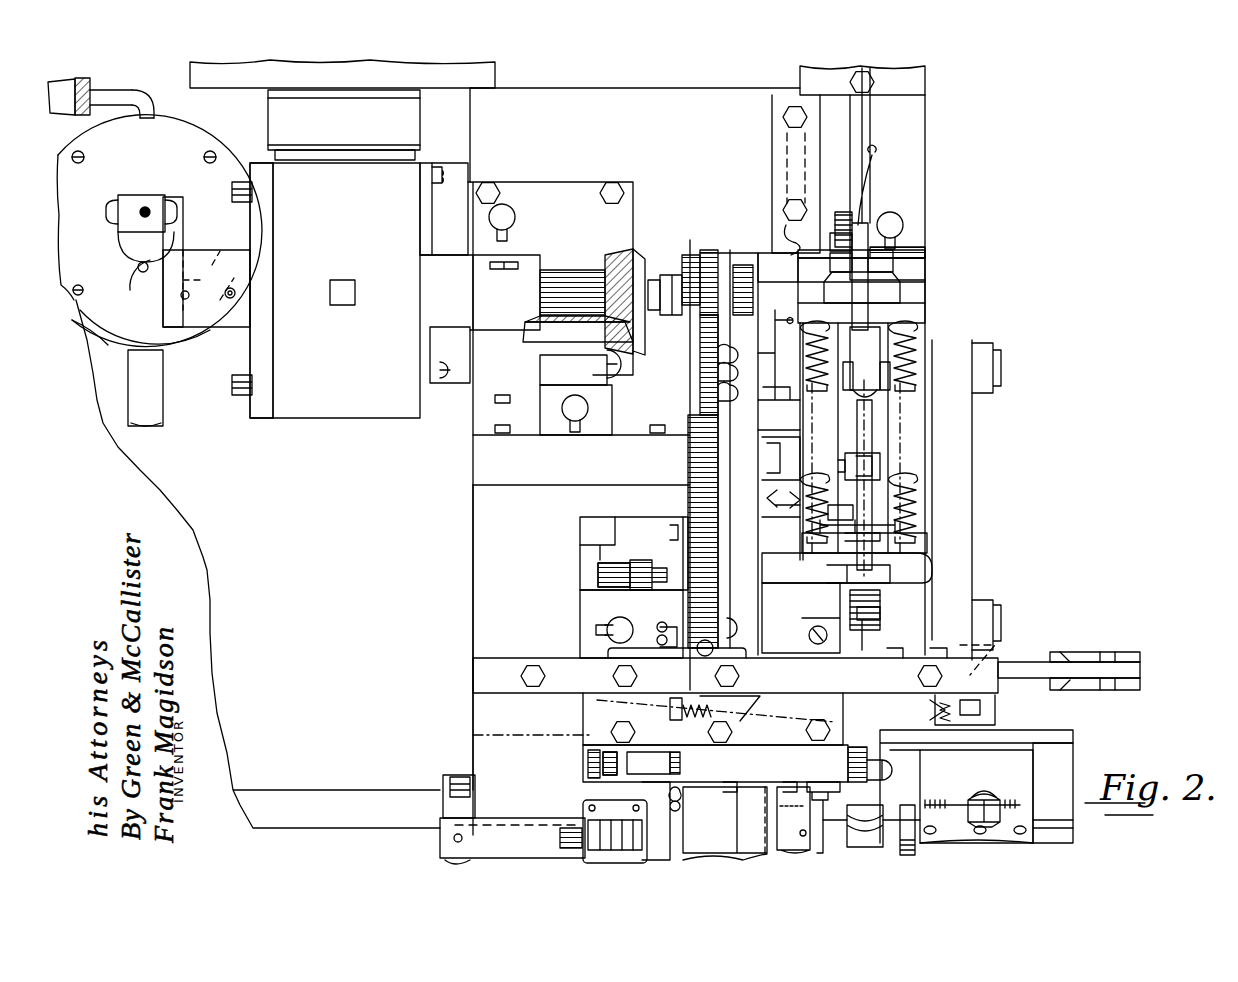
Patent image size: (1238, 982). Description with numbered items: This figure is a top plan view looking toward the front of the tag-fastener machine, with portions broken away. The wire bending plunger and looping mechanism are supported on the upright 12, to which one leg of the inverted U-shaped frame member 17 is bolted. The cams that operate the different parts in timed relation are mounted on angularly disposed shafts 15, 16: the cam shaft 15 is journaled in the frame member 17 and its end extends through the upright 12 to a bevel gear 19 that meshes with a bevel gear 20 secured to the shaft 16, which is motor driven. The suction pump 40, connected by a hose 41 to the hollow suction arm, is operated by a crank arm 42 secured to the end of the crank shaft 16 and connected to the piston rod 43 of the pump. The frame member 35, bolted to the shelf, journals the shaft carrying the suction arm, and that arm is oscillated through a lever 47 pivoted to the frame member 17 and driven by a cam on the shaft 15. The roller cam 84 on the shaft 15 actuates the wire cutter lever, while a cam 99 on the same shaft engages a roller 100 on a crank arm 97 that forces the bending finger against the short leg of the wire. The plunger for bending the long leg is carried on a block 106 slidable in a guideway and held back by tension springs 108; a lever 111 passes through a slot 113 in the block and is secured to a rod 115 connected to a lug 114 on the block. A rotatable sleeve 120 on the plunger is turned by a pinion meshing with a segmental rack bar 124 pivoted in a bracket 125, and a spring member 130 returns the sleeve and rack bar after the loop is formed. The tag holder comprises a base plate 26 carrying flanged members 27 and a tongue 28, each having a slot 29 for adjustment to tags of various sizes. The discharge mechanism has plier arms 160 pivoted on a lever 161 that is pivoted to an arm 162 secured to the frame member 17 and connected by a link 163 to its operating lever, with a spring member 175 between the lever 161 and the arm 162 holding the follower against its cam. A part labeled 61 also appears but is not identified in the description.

The upright 12 is at (581, 465).
The cam shaft 15 is at (560, 372).
The shaft 16 is at (232, 327).
The inverted U-shaped frame member 17 is at (495, 660).
The bevel gear 19 is at (525, 342).
The bevel gear 20 is at (624, 255).
The base plate 26 is at (1053, 793).
The flanged members 27 is at (925, 791).
The tongue 28 is at (866, 850).
The slot 29 is at (1004, 800).
The frame member 35 is at (675, 822).
The suction pump 40 is at (80, 320).
The hose 41 is at (156, 415).
The crank arm 42 is at (170, 282).
The piston rod 43 is at (140, 203).
The lever 47 is at (512, 819).
The lever 61 is at (877, 137).
The roller cam 84 is at (642, 562).
The crank arm 97 is at (807, 769).
The cam 99 is at (593, 760).
The roller 100 is at (653, 763).
The block 106 is at (878, 296).
The tension springs 108 is at (935, 362).
The lever 111 is at (890, 257).
The slot 113 is at (865, 345).
The lug 114 is at (885, 465).
The rod 115 is at (870, 443).
The rotatable sleeve 120 is at (880, 637).
The segmental rack bar 124 is at (777, 500).
The bracket 125 is at (928, 562).
The spring member 130 is at (890, 610).
The plier arms 160 is at (1078, 655).
The lever 161 is at (1015, 668).
The arm 162 is at (781, 694).
The link 163 is at (658, 708).
The spring member 175 is at (980, 720).